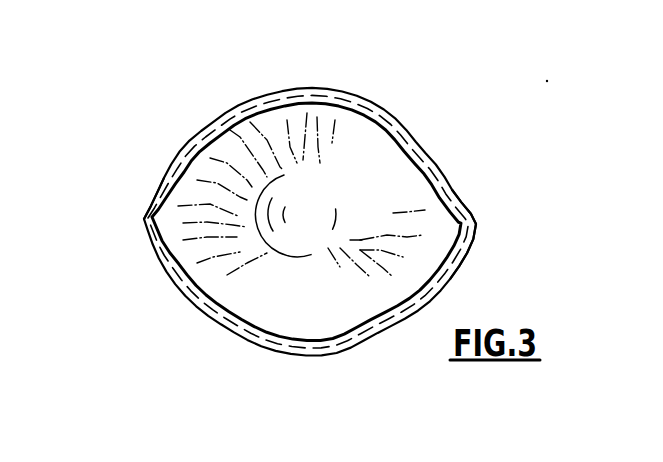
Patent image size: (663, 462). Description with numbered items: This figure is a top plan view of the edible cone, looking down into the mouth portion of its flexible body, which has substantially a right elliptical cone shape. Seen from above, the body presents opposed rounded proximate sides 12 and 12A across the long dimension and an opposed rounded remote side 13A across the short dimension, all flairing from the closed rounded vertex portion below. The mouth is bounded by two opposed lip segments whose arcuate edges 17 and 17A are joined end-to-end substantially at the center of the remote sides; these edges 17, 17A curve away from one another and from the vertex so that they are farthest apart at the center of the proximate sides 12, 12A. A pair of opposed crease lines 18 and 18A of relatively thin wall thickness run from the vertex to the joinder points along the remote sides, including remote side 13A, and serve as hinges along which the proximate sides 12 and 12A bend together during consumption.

The proximate side 12 is at (338, 352).
The proximate side 12A is at (367, 83).
The remote side 13A is at (477, 254).
The arcuate edge 17 is at (258, 343).
The arcuate edge 17A is at (240, 103).
The crease line 18 is at (143, 220).
The crease line 18A is at (475, 222).